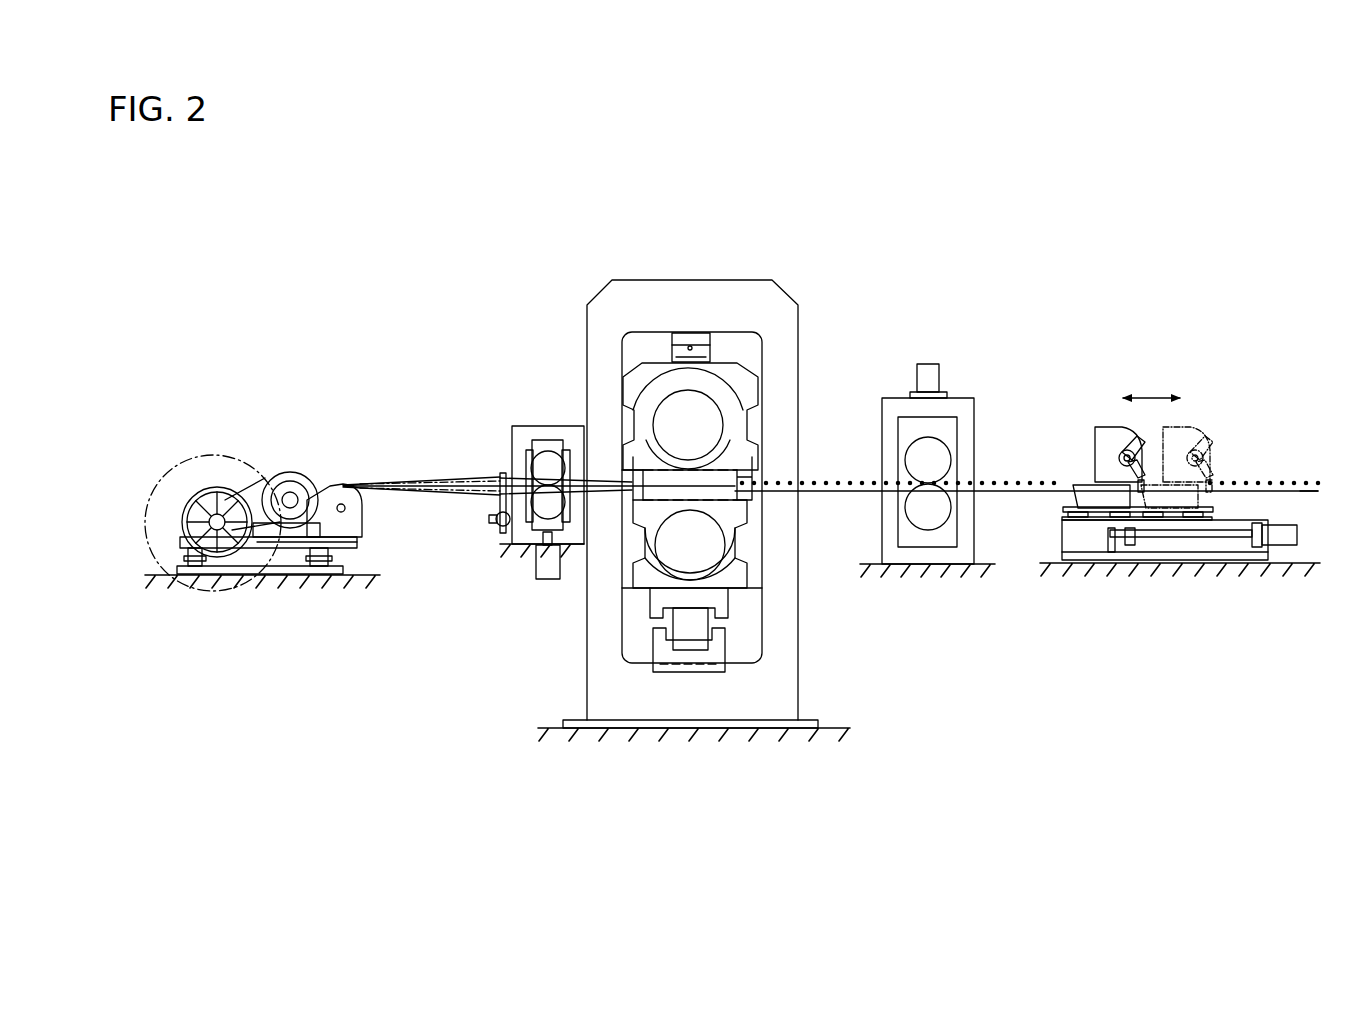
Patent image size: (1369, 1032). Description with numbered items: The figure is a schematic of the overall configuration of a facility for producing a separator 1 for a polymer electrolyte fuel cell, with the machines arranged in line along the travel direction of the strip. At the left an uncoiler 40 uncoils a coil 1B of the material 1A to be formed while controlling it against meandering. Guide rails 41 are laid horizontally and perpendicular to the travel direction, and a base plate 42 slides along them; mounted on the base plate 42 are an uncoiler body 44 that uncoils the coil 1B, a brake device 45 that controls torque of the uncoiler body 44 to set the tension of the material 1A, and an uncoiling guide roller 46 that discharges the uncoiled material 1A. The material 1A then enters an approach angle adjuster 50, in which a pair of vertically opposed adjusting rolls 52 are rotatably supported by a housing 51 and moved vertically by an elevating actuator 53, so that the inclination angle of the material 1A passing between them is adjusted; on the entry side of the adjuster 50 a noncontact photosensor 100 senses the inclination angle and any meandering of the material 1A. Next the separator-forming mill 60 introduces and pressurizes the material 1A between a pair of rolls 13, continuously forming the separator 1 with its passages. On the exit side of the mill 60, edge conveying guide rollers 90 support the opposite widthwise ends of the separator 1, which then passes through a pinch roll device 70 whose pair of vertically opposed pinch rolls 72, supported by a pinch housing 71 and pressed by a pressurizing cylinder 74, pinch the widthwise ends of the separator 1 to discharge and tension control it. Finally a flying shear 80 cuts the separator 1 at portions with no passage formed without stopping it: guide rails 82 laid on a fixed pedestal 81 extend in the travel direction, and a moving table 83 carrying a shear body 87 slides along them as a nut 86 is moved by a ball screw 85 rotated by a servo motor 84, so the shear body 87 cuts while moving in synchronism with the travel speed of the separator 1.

The separator 1 is at (1268, 475).
The material to be formed 1A is at (430, 480).
The coil 1B is at (156, 477).
The rolls 13 is at (746, 421).
The uncoiler 40 is at (242, 464).
The guide rails 41 is at (190, 557).
The base plate 42 is at (150, 538).
The uncoiler body 44 is at (224, 484).
The brake device 45 is at (296, 470).
The uncoiling guide roller 46 is at (357, 517).
The approach angle adjuster 50 is at (528, 473).
The housing 51 is at (540, 430).
The adjusting rolls 52 is at (537, 462).
The elevating actuator 53 is at (548, 575).
The separator-forming mill 60 is at (687, 435).
The pinch roll device 70 is at (899, 417).
The pinch housing 71 is at (884, 402).
The pinch rolls 72 is at (910, 457).
The pressurizing cylinder 74 is at (930, 373).
The flying shear 80 is at (1187, 457).
The fixed pedestal 81 is at (1088, 542).
The guide rails 82 is at (1212, 516).
The moving table 83 is at (1067, 508).
The servo motor 84 is at (1286, 533).
The ball screw 85 is at (1190, 538).
The nut 86 is at (1130, 546).
The shear body 87 is at (1084, 431).
The edge conveying guide rollers 90 is at (835, 489).
The noncontact photosensor 100 is at (494, 534).